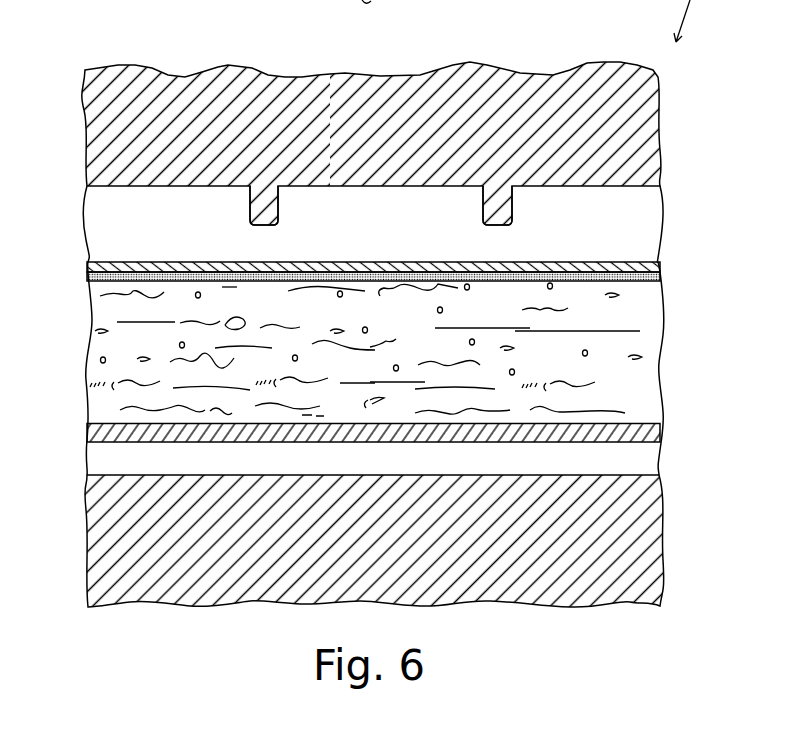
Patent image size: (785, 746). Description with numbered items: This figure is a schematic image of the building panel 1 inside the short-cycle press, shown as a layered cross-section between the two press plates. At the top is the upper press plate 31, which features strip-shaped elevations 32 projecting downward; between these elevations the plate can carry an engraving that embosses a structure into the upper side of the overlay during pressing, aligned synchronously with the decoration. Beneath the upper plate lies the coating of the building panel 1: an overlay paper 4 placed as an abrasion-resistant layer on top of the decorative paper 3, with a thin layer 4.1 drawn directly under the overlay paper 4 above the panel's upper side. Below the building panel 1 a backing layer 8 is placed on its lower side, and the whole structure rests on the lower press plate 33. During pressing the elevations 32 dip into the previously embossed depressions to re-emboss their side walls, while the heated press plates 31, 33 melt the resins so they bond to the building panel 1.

The upper press plate 31 is at (651, 124).
The strip-shaped elevations 32 is at (270, 210).
The decorative paper 3 is at (394, 246).
The overlay paper 4 is at (659, 264).
The adhesive layer 4.1 is at (658, 278).
The building panel 1 is at (641, 378).
The backing layer 8 is at (650, 436).
The lower press plate 33 is at (652, 516).